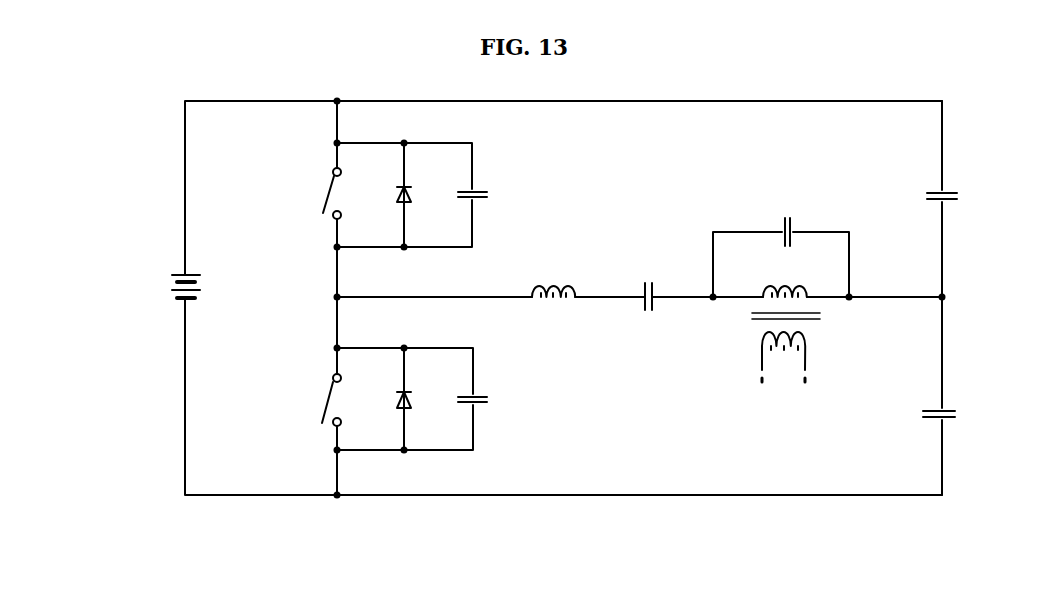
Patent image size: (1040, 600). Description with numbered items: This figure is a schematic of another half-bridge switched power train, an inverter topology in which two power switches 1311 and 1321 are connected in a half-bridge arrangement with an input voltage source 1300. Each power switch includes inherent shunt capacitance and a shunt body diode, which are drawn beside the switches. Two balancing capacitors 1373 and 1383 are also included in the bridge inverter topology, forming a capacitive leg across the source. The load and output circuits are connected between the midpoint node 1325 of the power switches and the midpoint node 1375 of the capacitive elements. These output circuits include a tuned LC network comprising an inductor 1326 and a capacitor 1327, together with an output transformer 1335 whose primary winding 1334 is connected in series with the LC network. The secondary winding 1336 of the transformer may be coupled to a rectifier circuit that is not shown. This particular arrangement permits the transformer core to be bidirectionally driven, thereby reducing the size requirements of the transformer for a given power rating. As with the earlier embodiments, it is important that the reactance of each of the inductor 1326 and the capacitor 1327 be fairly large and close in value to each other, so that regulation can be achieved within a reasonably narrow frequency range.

The input voltage source 1300 is at (161, 288).
The power switch 1311 is at (313, 193).
The power switch 1321 is at (310, 400).
The midpoint node 1325 is at (337, 297).
The inductor 1326 is at (553, 279).
The capacitor 1327 is at (650, 285).
The primary winding 1334 is at (785, 279).
The output transformer 1335 is at (878, 328).
The secondary winding 1336 is at (762, 331).
The balancing capacitor 1373 is at (965, 196).
The midpoint node 1375 is at (945, 297).
The balancing capacitor 1383 is at (961, 414).